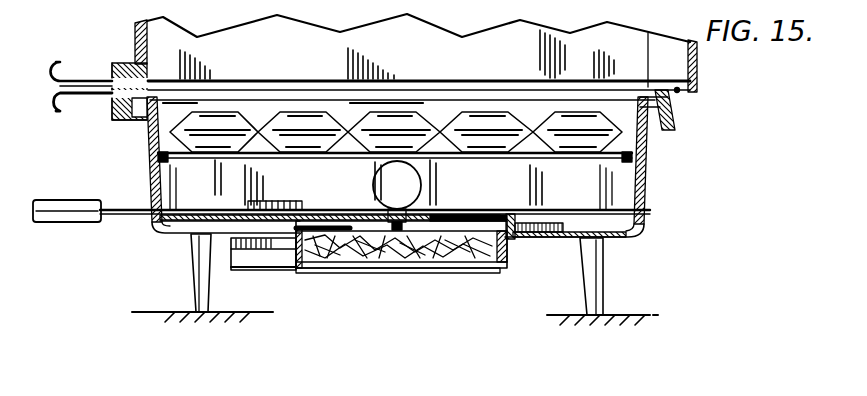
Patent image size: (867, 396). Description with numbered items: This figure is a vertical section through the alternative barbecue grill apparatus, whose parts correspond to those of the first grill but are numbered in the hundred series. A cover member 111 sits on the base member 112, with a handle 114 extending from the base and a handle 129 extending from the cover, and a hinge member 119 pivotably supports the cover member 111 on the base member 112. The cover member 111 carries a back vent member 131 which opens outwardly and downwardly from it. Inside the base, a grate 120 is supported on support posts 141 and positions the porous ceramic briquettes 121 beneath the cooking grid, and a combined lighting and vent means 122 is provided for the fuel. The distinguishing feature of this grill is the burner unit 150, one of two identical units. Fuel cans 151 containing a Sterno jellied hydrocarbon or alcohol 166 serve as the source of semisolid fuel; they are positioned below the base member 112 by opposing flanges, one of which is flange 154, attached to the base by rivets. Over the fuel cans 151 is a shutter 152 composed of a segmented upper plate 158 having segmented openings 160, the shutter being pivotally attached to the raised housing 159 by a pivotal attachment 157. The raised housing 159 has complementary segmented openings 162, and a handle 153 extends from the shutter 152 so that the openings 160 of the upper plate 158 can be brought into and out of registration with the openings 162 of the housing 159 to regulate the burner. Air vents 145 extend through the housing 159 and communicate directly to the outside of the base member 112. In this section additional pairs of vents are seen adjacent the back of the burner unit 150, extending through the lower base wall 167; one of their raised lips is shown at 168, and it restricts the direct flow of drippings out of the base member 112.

The cover member 111 is at (136, 27).
The base member 112 is at (648, 153).
The handle 114 is at (60, 62).
The hinge member 119 is at (678, 100).
The grate 120 is at (152, 159).
The porous ceramic briquettes 121 is at (148, 143).
The combined lighting and vent means 122 is at (420, 196).
The handle 129 is at (57, 110).
The back vent member 131 is at (698, 81).
The support posts 141 is at (167, 188).
The air vents 145 is at (262, 200).
The burner unit 150 is at (326, 200).
The fuel cans 151 is at (507, 256).
The shutter 152 is at (140, 222).
The handle 153 is at (41, 223).
The flange 154 is at (468, 273).
The pivotal attachment 157 is at (370, 210).
The segmented upper plate 158 is at (507, 213).
The raised housing 159 is at (192, 240).
The segmented openings 160 is at (468, 213).
The complementary segmented openings 162 is at (321, 263).
The jellied hydrocarbon or alcohol fuel 166 is at (415, 265).
The lower base wall 167 is at (582, 240).
The raised lip 168 is at (570, 206).